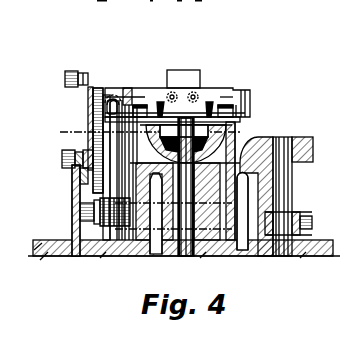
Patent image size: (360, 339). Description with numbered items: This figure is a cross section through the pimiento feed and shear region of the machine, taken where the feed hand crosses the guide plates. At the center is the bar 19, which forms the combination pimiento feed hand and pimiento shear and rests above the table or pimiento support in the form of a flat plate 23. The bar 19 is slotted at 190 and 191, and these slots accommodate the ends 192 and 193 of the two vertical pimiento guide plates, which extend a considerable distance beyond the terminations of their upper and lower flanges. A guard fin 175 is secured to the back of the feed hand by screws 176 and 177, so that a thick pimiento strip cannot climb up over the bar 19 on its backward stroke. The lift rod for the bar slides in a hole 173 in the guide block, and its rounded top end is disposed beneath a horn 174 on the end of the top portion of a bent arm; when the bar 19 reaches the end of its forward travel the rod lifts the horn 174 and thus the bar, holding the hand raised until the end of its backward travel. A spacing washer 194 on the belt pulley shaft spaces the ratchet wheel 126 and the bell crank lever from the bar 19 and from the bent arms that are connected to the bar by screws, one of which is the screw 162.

The bar 19 is at (246, 103).
The flat plate 23 is at (236, 123).
The ratchet wheel 126 is at (96, 137).
The screw 162 is at (243, 105).
The hole 173 is at (120, 181).
The horn 174 is at (128, 100).
The guard fin 175 is at (178, 70).
The screw 176 is at (208, 103).
The screw 177 is at (168, 89).
The slot 190 is at (160, 102).
The slot 191 is at (214, 105).
The end of pimiento guide plate 192 is at (156, 108).
The end of pimiento guide plate 193 is at (236, 107).
The spacing washer 194 is at (88, 124).